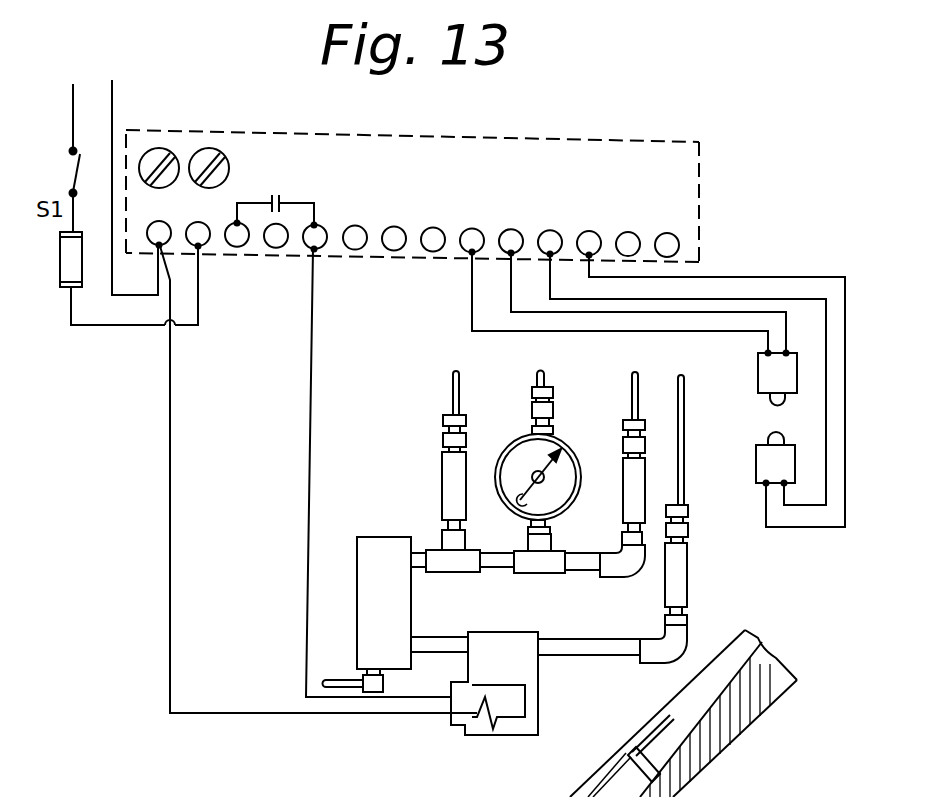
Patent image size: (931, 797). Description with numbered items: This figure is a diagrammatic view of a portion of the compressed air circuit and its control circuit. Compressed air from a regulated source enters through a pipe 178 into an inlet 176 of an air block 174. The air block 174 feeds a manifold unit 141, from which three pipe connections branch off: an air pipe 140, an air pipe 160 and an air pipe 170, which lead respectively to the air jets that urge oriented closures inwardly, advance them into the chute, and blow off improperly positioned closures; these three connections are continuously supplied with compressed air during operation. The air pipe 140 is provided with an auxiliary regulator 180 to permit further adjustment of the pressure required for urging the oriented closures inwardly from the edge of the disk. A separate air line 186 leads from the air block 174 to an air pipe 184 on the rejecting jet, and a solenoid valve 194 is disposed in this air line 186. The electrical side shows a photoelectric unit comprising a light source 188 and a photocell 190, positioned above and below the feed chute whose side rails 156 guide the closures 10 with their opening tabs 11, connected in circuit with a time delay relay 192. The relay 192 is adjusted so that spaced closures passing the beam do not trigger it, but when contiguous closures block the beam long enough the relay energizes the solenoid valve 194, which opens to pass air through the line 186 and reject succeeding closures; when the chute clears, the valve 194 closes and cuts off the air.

The time delay relay 192 is at (562, 139).
The light source 188 is at (758, 370).
The photocell 190 is at (756, 460).
The air pipe 170 is at (452, 397).
The air pipe 140 is at (537, 375).
The auxiliary regulator 180 is at (566, 495).
The air pipe 160 is at (633, 393).
The air pipe 184 is at (679, 378).
The air block 174 is at (378, 540).
The manifold unit 141 is at (578, 570).
The air line 186 is at (593, 655).
The solenoid valve 194 is at (538, 716).
The inlet 176 is at (375, 694).
The pipe 178 is at (331, 689).
The side rails 156 is at (760, 652).
The closures 10 is at (607, 792).
The opening tabs 11 is at (553, 796).